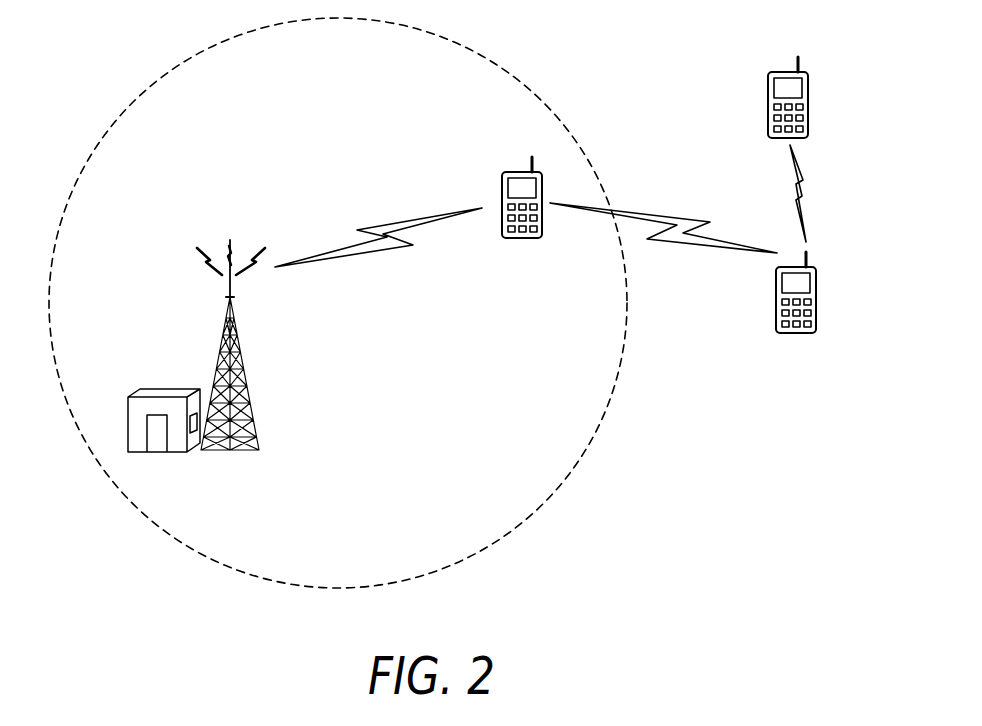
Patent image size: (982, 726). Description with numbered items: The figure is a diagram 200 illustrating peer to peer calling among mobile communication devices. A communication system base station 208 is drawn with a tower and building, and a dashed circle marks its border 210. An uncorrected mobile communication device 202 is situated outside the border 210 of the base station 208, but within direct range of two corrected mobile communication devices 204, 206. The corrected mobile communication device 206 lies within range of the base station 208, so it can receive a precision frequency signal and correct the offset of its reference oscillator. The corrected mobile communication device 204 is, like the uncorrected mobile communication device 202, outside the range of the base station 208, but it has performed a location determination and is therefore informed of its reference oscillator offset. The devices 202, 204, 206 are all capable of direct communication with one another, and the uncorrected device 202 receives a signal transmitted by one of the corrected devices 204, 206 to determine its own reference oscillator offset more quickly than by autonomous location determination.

The diagram 200 is at (545, 608).
The uncorrected mobile communication device 202 is at (797, 333).
The corrected mobile communication device 204 is at (768, 101).
The corrected mobile communication device 206 is at (521, 238).
The communication system base station 208 is at (218, 335).
The border 210 is at (434, 34).